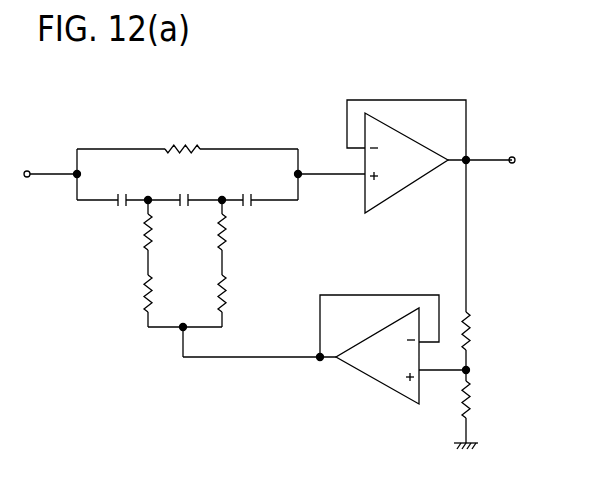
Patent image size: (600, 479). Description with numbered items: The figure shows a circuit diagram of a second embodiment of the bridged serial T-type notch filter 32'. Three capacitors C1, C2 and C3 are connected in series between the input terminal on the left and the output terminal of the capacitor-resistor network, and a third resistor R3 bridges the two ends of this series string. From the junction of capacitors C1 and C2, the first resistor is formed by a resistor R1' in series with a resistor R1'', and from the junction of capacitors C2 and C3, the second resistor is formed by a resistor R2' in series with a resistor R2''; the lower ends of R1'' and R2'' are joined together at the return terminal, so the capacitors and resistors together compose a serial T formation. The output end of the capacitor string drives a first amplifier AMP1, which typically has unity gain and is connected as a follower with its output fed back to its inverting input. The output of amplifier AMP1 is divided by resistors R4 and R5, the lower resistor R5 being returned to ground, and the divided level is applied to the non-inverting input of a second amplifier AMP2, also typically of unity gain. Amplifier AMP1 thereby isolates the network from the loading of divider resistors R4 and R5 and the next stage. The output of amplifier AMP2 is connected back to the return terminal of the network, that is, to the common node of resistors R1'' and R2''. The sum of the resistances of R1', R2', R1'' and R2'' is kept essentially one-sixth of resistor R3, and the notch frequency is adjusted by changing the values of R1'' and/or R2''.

The notch filter 32' is at (438, 142).
The third resistor R3 is at (182, 136).
The capacitor C1 is at (121, 190).
The capacitor C2 is at (183, 190).
The capacitor C3 is at (245, 190).
The resistor R1' is at (162, 232).
The resistor R1'' is at (163, 293).
The resistor R2' is at (236, 232).
The resistor R2'' is at (237, 293).
The divider resistor R4 is at (480, 331).
The divider resistor R5 is at (480, 399).
The first amplifier AMP1 is at (406, 163).
The second amplifier AMP2 is at (377, 356).